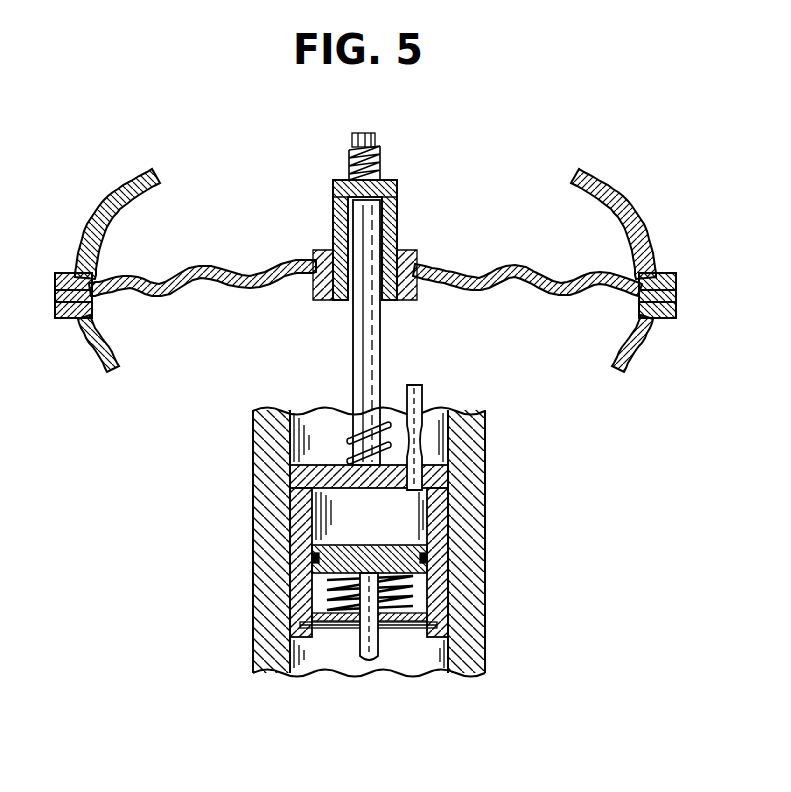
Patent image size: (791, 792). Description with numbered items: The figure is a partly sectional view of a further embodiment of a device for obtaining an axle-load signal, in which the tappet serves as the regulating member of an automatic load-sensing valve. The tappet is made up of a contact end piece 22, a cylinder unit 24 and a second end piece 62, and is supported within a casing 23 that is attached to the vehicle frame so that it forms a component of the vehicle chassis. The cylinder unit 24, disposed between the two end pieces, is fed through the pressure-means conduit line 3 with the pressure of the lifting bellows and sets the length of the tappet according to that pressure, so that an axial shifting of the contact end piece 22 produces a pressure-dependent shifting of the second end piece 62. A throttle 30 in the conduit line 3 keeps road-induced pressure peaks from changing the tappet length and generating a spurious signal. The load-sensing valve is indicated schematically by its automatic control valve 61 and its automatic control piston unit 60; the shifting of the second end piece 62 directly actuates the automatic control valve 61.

The pressure-means conduit line 3 is at (418, 389).
The contact end piece 22 is at (362, 652).
The casing 23 is at (477, 630).
The cylinder unit 24 is at (290, 567).
The throttle 30 is at (432, 432).
The automatic control piston unit 60 is at (306, 246).
The automatic control valve 61 is at (326, 186).
The second end piece 62 is at (383, 330).